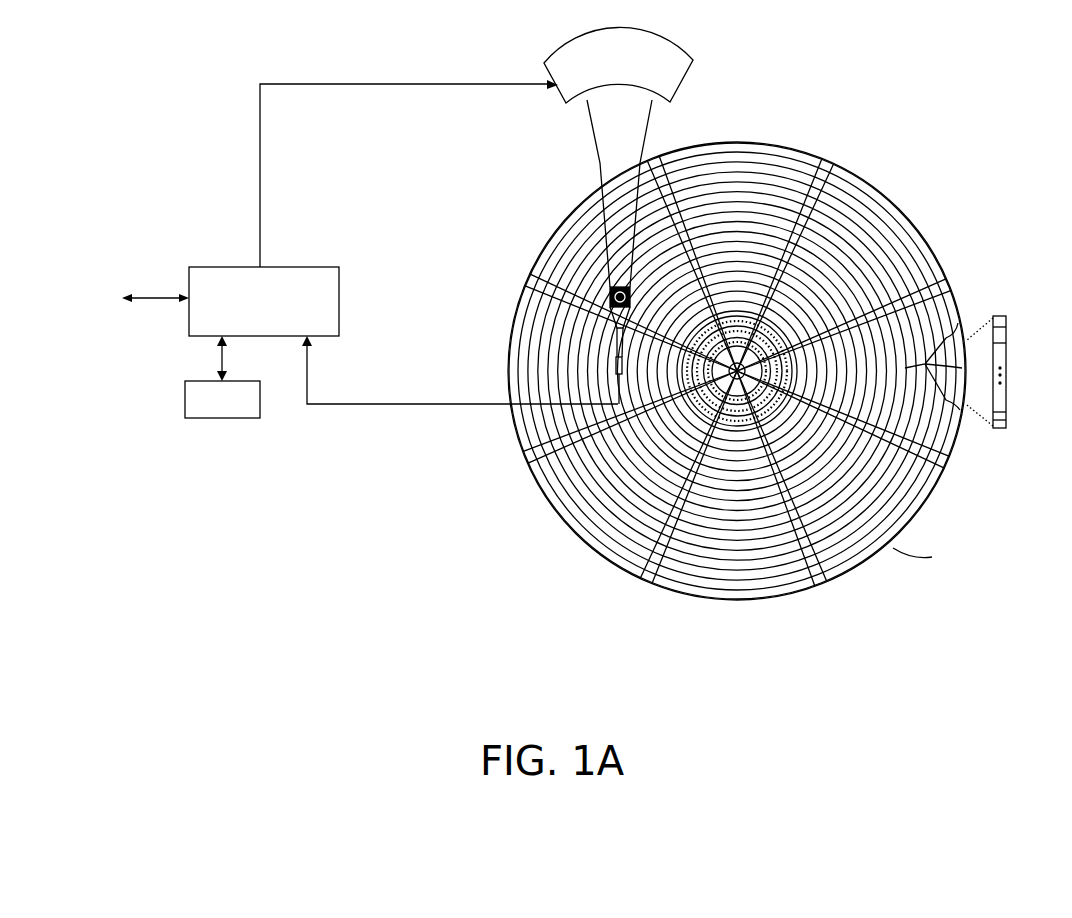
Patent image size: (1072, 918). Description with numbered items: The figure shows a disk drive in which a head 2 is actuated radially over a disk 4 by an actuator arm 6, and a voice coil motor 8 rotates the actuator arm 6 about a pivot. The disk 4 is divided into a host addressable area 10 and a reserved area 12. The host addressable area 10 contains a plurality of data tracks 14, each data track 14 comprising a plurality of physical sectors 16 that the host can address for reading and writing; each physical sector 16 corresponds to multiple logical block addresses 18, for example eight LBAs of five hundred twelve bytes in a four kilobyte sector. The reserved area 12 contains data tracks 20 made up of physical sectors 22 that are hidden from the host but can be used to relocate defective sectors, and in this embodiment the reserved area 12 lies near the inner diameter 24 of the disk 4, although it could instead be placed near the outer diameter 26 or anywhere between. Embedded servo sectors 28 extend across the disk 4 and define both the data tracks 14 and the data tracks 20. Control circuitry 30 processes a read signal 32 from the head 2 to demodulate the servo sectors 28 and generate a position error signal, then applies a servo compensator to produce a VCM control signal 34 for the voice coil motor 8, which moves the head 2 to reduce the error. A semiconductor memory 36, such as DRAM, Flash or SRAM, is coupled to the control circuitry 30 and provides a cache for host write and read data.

The head 2 is at (606, 365).
The disk 4 is at (916, 213).
The actuator arm 6 is at (600, 162).
The voice coil motor 8 is at (562, 101).
The host addressable area 10 is at (916, 490).
The reserved area 12 is at (712, 408).
The data track 14 is at (754, 154).
The physical sector 16 is at (921, 366).
The logical block addresses 18 is at (1004, 324).
The data track 20 is at (700, 372).
The physical sector 22 is at (766, 318).
The inner diameter 24 is at (740, 408).
The outer diameter 26 is at (913, 566).
The embedded servo sectors 28 is at (636, 610).
The control circuitry 30 is at (312, 266).
The read signal 32 is at (399, 403).
The VCM control signal 34 is at (258, 210).
The semiconductor memory 36 is at (184, 400).